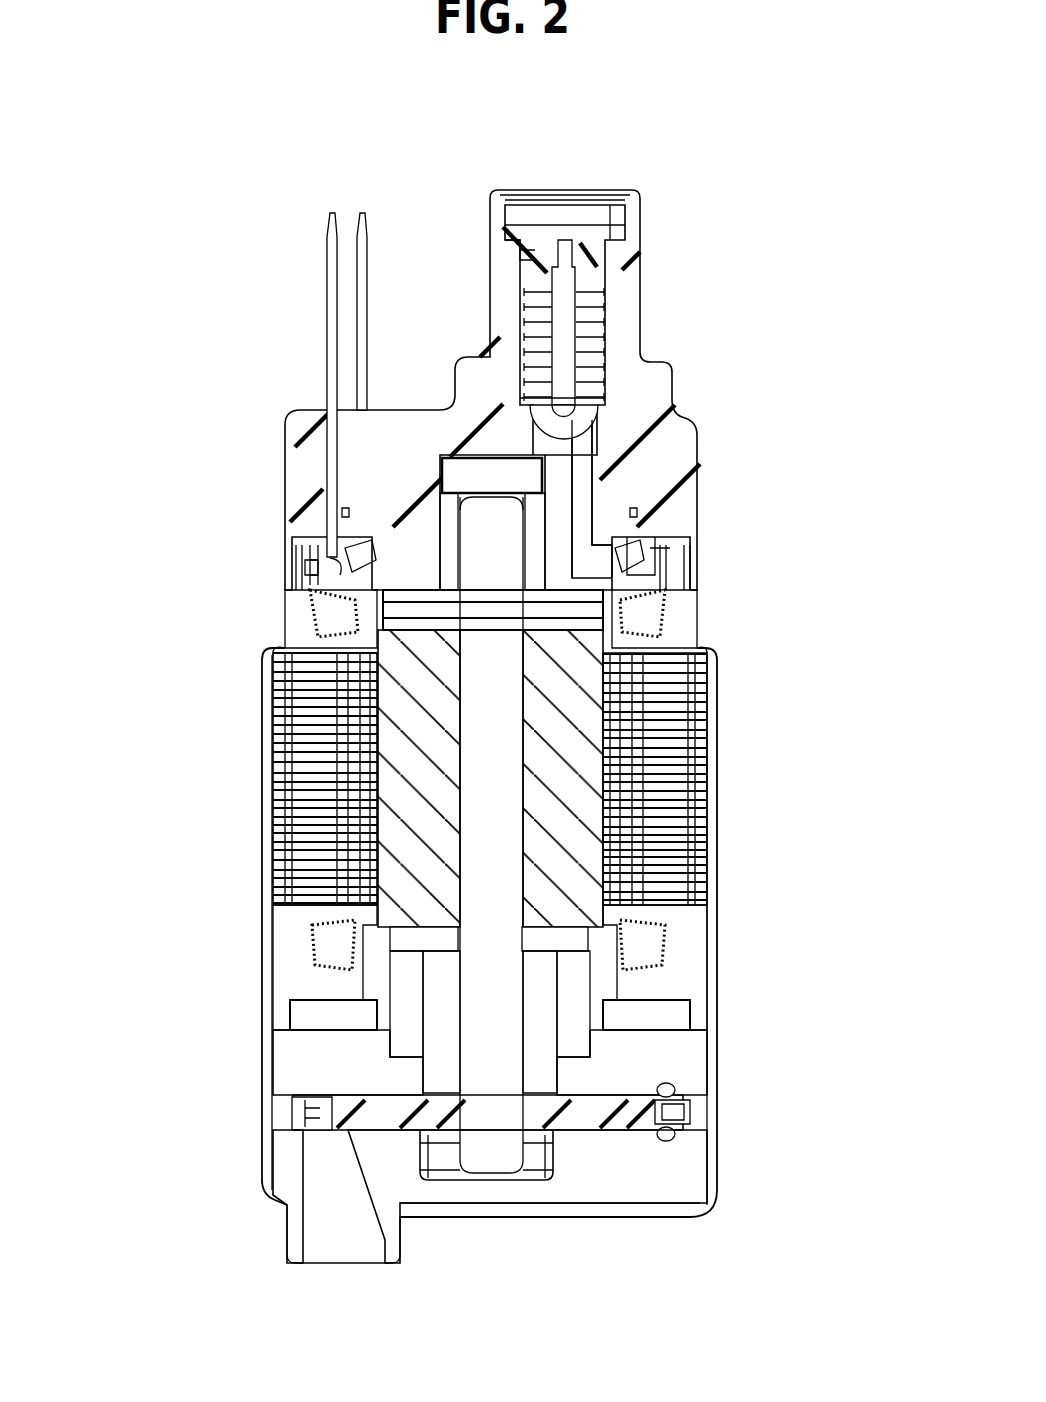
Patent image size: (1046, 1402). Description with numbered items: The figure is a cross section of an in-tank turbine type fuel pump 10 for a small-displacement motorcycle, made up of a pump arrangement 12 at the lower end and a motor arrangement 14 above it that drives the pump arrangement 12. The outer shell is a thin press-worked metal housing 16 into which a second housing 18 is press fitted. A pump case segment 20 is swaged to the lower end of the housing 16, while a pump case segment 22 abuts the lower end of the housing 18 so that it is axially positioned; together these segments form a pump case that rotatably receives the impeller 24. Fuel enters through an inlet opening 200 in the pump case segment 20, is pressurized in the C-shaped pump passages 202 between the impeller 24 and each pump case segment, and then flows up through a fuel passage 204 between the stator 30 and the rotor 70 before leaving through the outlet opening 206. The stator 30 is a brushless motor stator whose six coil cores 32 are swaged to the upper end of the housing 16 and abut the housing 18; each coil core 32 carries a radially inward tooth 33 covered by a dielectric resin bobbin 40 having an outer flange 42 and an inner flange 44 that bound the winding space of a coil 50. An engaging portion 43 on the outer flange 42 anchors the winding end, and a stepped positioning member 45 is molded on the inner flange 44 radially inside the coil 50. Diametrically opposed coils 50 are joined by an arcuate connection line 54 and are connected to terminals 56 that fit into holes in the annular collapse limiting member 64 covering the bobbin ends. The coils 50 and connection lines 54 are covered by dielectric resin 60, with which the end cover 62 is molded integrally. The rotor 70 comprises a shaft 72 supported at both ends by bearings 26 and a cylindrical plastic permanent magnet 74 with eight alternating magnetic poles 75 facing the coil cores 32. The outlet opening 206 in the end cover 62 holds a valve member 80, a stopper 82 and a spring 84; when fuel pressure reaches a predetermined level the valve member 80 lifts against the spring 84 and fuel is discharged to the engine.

The fuel pump 10 is at (662, 172).
The pump arrangement 12 is at (233, 1116).
The motor arrangement 14 is at (233, 796).
The housing 16 is at (714, 1008).
The housing 18 is at (280, 985).
The pump case segment 20 is at (597, 1190).
The pump case segment 22 is at (290, 1052).
The impeller 24 is at (448, 1130).
The bearing 26 is at (455, 500).
The stator 30 is at (724, 759).
The coil core 32 is at (280, 820).
The tooth 33 is at (300, 882).
The bobbin 40 is at (300, 932).
The outer flange 42 is at (296, 615).
The engaging portion 43 is at (295, 548).
The inner flange 44 is at (315, 605).
The positioning member 45 is at (305, 562).
The coil 50 is at (305, 606).
The connection line 54 is at (363, 482).
The terminal 56 is at (330, 213).
The dielectric resin 60 is at (683, 985).
The end cover 62 is at (663, 392).
The collapse limiting member 64 is at (320, 545).
The rotor 70 is at (600, 545).
The shaft 72 is at (497, 1160).
The permanent magnet 74 is at (580, 608).
The magnetic pole 75 is at (435, 742).
The valve member 80 is at (592, 412).
The stopper 82 is at (515, 215).
The spring 84 is at (598, 318).
The inlet opening 200 is at (342, 1245).
The pump passage 202 is at (683, 1085).
The fuel passage 204 is at (300, 838).
The outlet opening 206 is at (594, 213).